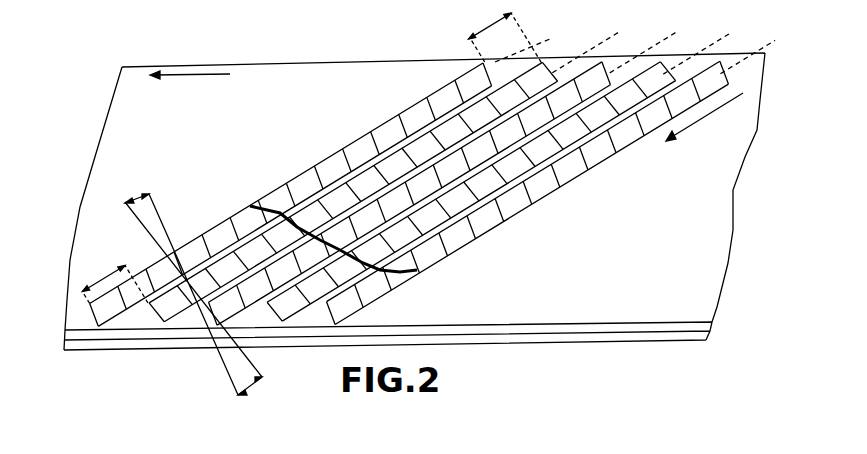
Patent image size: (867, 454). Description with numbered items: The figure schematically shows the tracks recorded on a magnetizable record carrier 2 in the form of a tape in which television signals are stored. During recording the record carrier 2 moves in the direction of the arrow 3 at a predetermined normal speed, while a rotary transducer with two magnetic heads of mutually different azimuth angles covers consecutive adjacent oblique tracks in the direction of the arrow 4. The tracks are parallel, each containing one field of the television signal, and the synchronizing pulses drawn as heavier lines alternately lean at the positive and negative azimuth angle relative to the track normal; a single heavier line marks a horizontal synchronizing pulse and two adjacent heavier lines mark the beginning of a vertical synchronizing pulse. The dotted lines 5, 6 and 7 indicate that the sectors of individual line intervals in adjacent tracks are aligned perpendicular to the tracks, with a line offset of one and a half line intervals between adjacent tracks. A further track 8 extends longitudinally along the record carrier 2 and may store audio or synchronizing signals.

The record carrier 2 is at (325, 70).
The arrow 3 is at (183, 72).
The arrow 4 is at (693, 127).
The dotted line 5 is at (229, 312).
The dotted line 6 is at (256, 300).
The dotted line 7 is at (308, 305).
The further track 8 is at (600, 328).